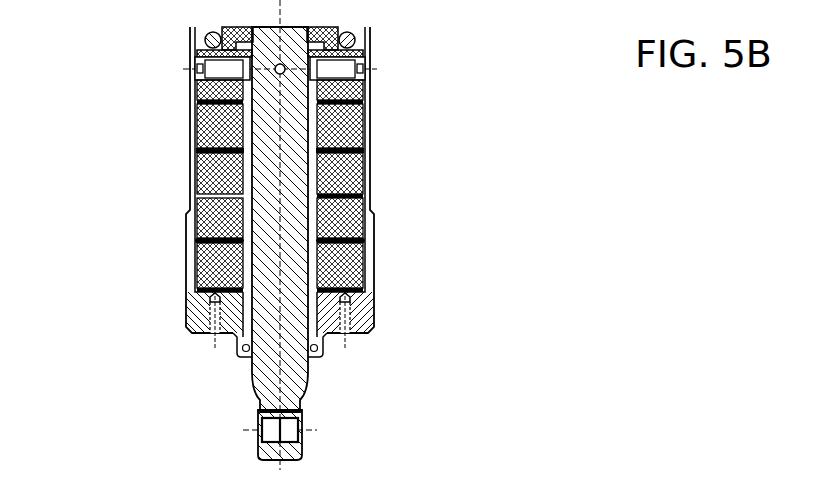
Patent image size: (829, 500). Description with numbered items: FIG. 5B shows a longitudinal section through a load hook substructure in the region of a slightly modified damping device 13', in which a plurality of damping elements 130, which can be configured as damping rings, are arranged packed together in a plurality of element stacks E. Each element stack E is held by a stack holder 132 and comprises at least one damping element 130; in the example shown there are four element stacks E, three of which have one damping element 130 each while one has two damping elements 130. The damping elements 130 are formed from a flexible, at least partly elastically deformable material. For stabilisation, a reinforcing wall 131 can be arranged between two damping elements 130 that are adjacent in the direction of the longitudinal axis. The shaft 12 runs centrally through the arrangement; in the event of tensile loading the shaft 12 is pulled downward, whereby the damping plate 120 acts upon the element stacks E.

The shaft 12 is at (305, 161).
The damping device 13' is at (376, 188).
The damping plate 120 is at (230, 63).
The damping element 130 is at (238, 231).
The reinforcing wall 131 is at (345, 196).
The stack holder 132 is at (217, 247).
The element stack E is at (393, 238).